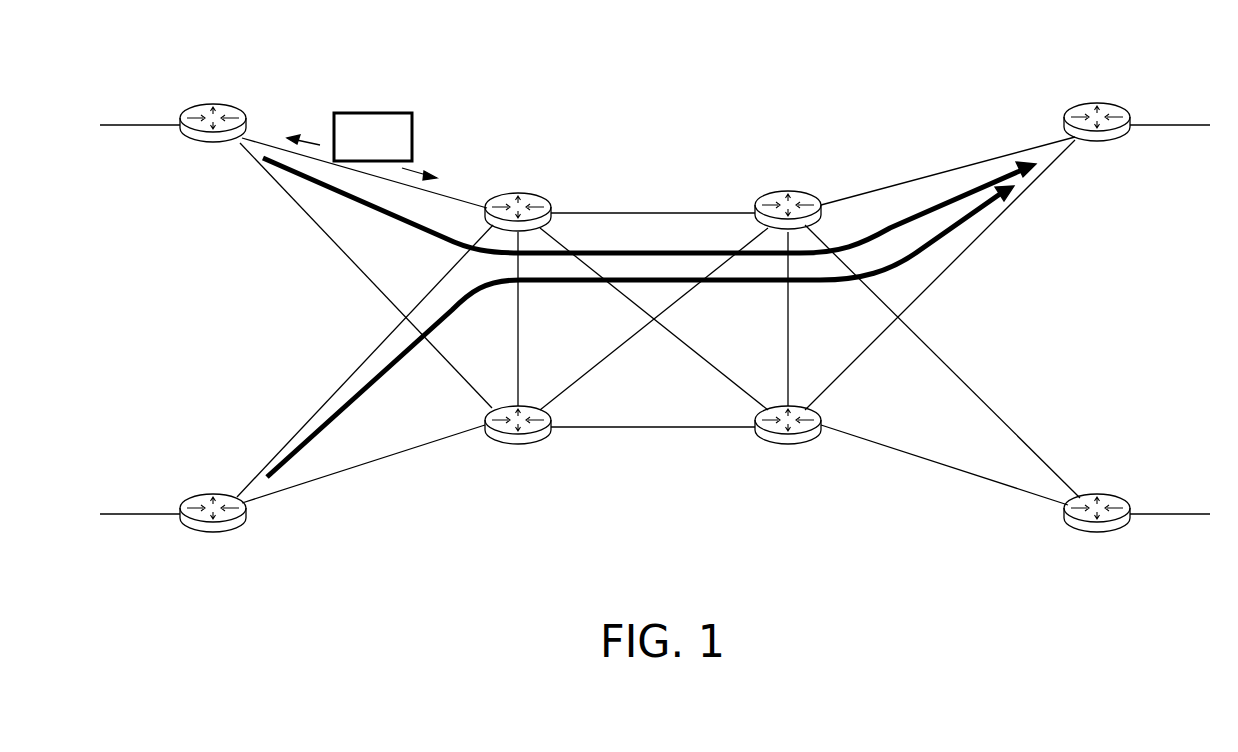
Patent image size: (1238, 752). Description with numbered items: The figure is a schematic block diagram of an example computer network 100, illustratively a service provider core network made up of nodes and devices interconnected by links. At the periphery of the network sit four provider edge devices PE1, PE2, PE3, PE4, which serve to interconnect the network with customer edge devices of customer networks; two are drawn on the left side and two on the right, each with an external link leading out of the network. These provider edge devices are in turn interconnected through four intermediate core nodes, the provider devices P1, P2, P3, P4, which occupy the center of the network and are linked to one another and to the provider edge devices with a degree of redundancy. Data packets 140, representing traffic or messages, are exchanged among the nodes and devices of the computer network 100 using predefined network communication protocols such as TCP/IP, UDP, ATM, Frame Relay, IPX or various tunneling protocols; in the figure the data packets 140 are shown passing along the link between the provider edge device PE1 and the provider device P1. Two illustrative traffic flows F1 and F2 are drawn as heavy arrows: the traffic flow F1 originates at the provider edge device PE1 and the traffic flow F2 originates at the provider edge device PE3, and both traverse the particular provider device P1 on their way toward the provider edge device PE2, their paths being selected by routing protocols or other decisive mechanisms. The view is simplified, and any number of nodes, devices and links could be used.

The computer network 100 is at (925, 58).
The data packets 140 is at (390, 148).
The provider edge device PE1 is at (210, 150).
The provider edge device PE2 is at (1092, 150).
The provider edge device PE3 is at (210, 540).
The provider edge device PE4 is at (1092, 540).
The provider device P1 is at (515, 190).
The provider device P2 is at (785, 188).
The provider device P3 is at (505, 445).
The provider device P4 is at (790, 446).
The traffic flow F1 is at (366, 200).
The traffic flow F2 is at (343, 410).